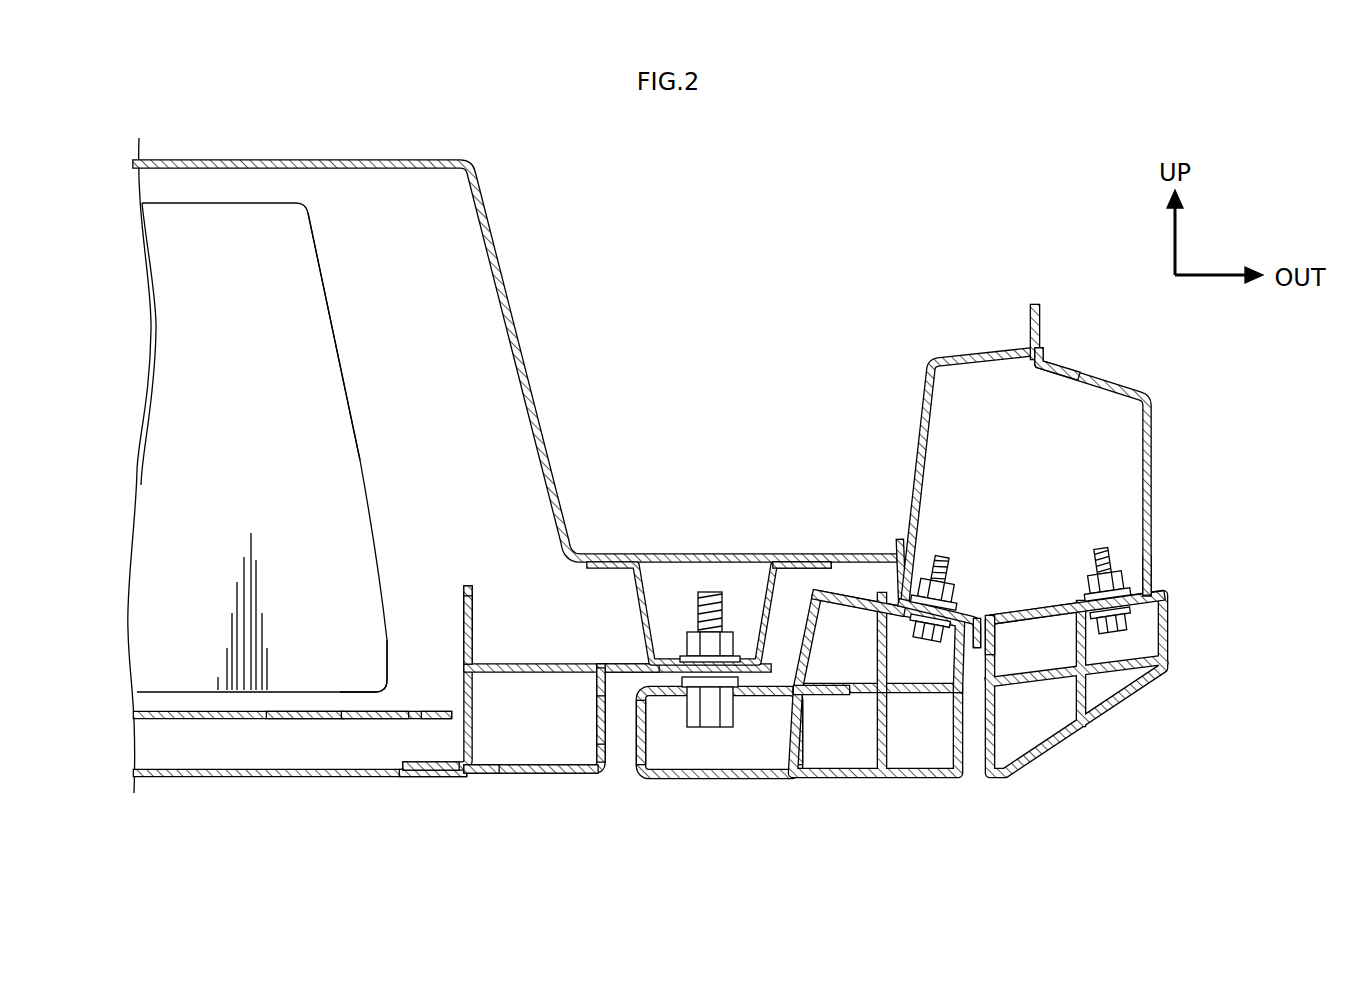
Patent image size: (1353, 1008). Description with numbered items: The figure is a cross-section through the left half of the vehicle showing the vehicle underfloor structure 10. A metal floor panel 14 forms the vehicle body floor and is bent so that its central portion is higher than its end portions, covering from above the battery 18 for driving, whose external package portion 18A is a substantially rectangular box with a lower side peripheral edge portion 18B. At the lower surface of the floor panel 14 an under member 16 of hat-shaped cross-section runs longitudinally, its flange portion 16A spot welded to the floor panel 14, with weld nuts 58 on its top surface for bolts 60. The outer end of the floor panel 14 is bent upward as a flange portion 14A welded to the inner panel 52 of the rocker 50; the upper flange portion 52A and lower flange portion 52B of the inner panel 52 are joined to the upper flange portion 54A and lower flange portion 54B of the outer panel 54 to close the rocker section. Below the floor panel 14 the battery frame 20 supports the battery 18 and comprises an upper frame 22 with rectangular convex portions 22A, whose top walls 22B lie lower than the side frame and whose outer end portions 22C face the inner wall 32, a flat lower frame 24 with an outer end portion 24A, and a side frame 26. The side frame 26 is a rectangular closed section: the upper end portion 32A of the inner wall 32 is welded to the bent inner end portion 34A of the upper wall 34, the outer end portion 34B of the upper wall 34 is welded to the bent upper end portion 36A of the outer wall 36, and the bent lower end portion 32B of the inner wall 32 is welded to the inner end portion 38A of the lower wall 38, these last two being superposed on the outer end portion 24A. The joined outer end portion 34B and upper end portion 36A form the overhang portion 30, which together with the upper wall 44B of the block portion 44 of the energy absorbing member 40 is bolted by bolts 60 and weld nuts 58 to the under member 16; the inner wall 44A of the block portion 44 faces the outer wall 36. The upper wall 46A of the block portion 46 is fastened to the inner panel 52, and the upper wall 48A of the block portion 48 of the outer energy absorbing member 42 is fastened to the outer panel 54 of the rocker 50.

The vehicle underfloor structure 10 is at (685, 450).
The floor panel 14 is at (497, 252).
The flange portion 14A is at (893, 540).
The under member 16 is at (648, 610).
The flange portion 16A is at (828, 565).
The battery for driving 18 is at (322, 260).
The external package portion 18A is at (348, 345).
The lower side peripheral edge portion 18B is at (388, 690).
The battery frame 20 is at (348, 692).
The upper frame 22 is at (175, 708).
The convex portion 22A is at (308, 708).
The top wall 22B is at (363, 700).
The vehicle transverse direction outer side end portion 22C is at (467, 720).
The lower frame 24 is at (240, 780).
The outer end portion 24A is at (425, 778).
The side frame 26 is at (564, 765).
The overhang portion 30 is at (800, 690).
The inner wall 32 is at (466, 712).
The upper end portion 32A is at (466, 590).
The lower end portion 32B is at (433, 760).
The upper wall 34 is at (527, 662).
The inner end portion 34A is at (478, 605).
The outer end portion 34B is at (621, 664).
The outer wall 36 is at (603, 745).
The upper end portion 36A is at (620, 737).
The lower wall 38 is at (487, 775).
The inner end portion 38A is at (447, 775).
The energy absorbing member 40 is at (876, 722).
The energy absorbing member 42 is at (1087, 732).
The block portion 44 is at (767, 776).
The inner wall 44A is at (650, 728).
The upper wall 44B is at (752, 700).
The block portion 46 is at (950, 662).
The upper wall 46A is at (900, 617).
The block portion 48 is at (1172, 608).
The upper wall 48A is at (1152, 565).
The rocker 50 is at (1067, 518).
The inner panel 52 is at (965, 356).
The upper flange portion 52A is at (1032, 308).
The lower flange portion 52B is at (970, 648).
The outer panel 54 is at (1097, 381).
The upper flange portion 54A is at (1038, 335).
The lower flange portion 54B is at (984, 650).
The weld nut 58 is at (735, 598).
The bolt 60 is at (718, 728).